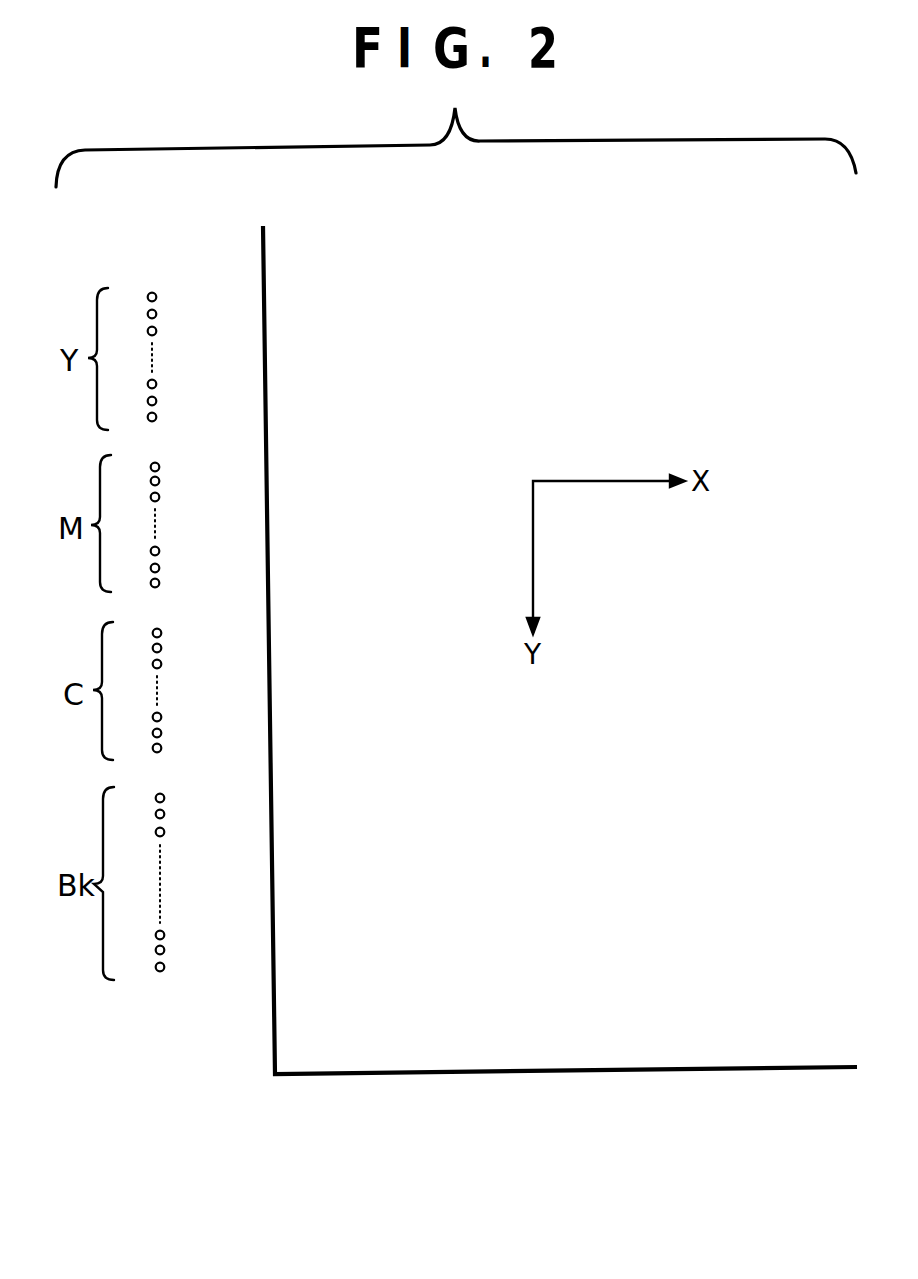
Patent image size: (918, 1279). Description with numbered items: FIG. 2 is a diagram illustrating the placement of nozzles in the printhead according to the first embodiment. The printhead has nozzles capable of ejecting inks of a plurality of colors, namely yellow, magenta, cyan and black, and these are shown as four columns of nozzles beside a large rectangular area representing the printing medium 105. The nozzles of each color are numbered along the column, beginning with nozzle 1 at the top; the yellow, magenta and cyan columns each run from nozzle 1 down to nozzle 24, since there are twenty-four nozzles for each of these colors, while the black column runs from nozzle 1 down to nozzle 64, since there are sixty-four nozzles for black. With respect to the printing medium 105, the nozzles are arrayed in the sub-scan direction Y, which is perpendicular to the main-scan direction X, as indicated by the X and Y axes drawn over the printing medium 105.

The printing medium 105 is at (572, 1072).
The first nozzle of each nozzle array 1 is at (146, 549).
The 24th (last) nozzle of Y, M, C nozzle arrays 24 is at (138, 585).
The 64th (last) nozzle of Bk nozzle array 64 is at (143, 971).